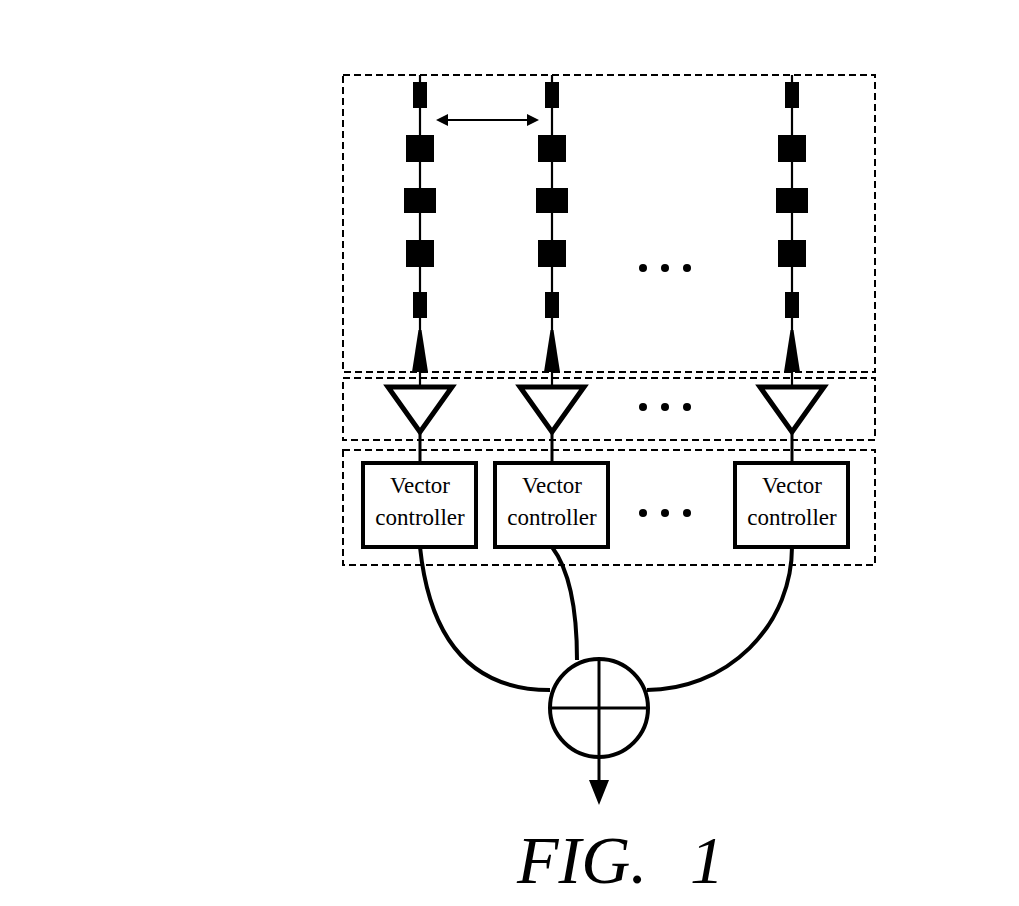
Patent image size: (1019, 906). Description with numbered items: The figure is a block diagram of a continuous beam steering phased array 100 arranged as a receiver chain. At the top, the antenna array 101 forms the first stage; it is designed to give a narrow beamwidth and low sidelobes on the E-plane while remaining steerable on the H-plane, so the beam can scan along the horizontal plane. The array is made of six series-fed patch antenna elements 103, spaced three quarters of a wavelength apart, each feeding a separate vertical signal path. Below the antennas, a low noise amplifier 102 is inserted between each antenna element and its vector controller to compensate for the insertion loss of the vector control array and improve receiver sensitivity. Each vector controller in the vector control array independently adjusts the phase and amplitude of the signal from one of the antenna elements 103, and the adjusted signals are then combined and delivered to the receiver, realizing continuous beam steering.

The continuous beam steering phased array 100 is at (545, 320).
The antenna array 101 is at (406, 198).
The low noise amplifier (LNA) 102 is at (420, 395).
The antenna elements 103 is at (442, 627).